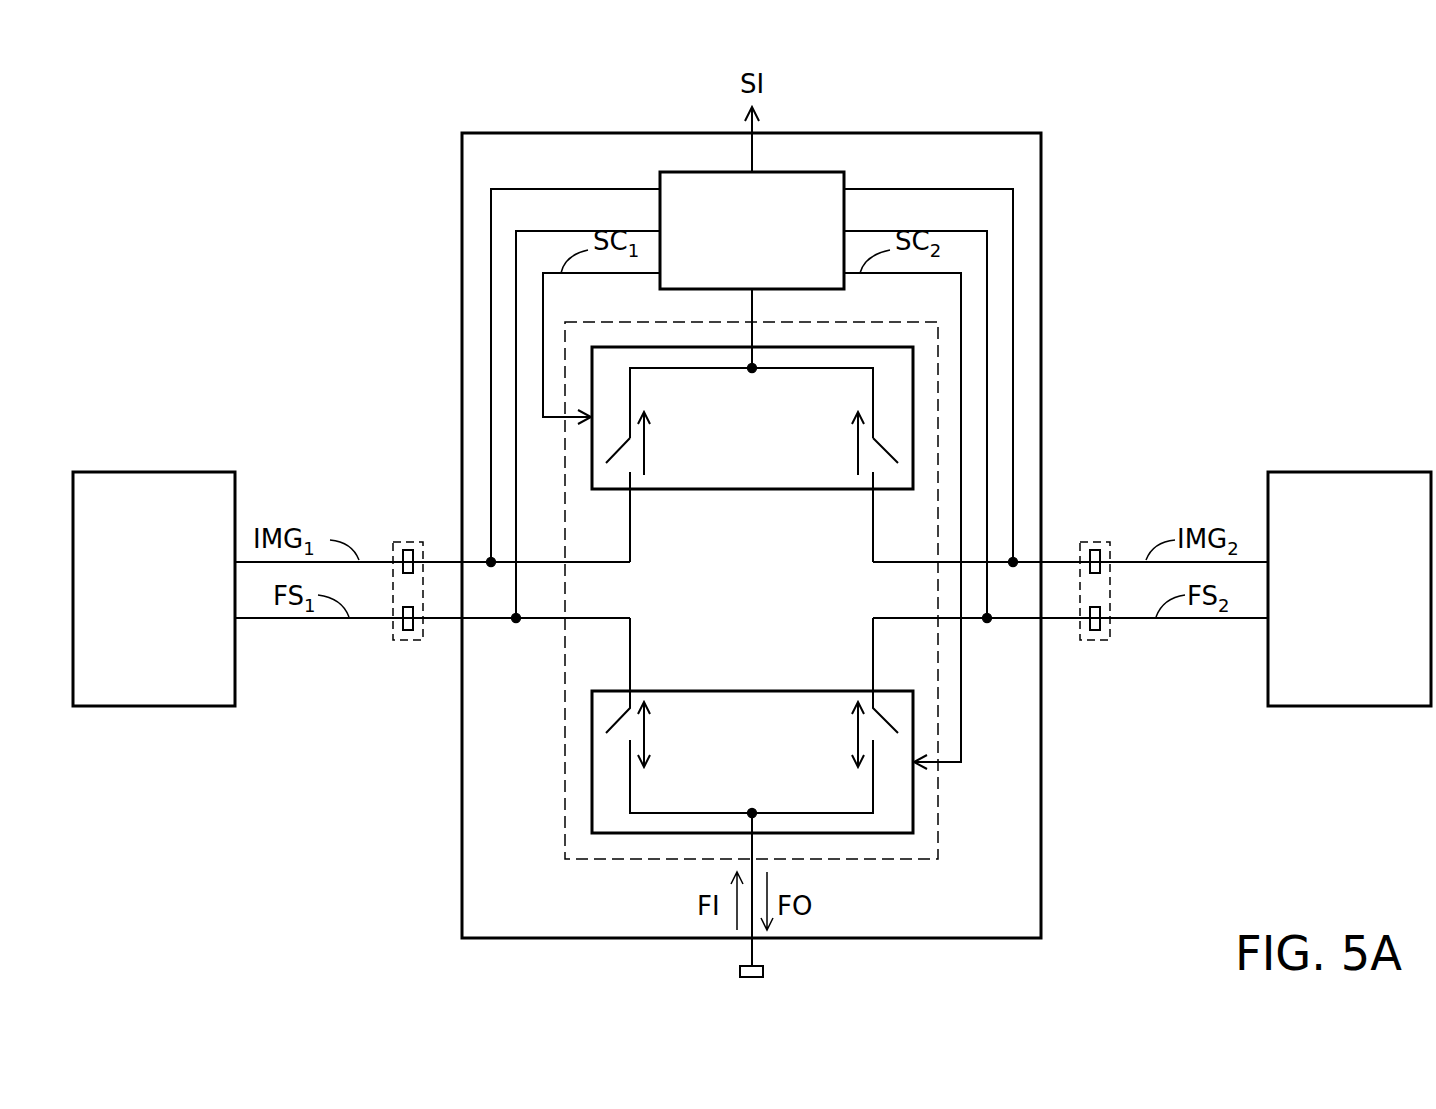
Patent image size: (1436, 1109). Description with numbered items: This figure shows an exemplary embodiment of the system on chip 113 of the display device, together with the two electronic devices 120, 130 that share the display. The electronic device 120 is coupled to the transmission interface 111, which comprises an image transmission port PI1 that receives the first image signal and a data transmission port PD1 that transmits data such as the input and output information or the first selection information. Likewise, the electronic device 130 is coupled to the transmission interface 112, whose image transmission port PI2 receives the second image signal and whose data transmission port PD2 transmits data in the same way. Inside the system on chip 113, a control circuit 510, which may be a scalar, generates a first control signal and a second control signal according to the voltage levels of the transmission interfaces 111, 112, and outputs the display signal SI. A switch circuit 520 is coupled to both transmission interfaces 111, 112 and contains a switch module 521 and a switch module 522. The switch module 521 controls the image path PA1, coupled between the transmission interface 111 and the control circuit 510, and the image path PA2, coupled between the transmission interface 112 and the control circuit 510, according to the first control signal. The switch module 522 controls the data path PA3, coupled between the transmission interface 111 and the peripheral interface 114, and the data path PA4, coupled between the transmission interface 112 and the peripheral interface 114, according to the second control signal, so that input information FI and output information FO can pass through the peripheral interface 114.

The system on chip 113 is at (1020, 133).
The control circuit 510 is at (822, 172).
The switch circuit 520 is at (905, 860).
The switch module 521 is at (752, 454).
The switch module 522 is at (752, 725).
The peripheral interface 114 is at (765, 970).
The electronic device 120 is at (155, 472).
The electronic device 130 is at (1350, 472).
The transmission interface 111 is at (365, 615).
The transmission interface 112 is at (1138, 615).
The image transmission port PI1 is at (408, 548).
The data transmission port PD1 is at (406, 641).
The image transmission port PI2 is at (1096, 548).
The data transmission port PD2 is at (1099, 641).
The image path PA1 is at (645, 453).
The image path PA2 is at (857, 453).
The data path PA3 is at (645, 741).
The data path PA4 is at (857, 741).